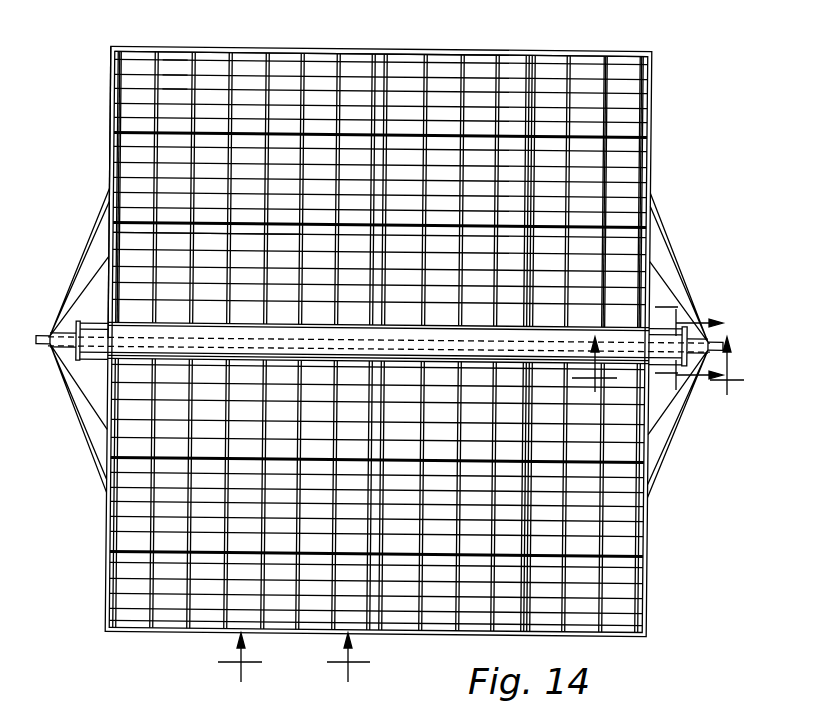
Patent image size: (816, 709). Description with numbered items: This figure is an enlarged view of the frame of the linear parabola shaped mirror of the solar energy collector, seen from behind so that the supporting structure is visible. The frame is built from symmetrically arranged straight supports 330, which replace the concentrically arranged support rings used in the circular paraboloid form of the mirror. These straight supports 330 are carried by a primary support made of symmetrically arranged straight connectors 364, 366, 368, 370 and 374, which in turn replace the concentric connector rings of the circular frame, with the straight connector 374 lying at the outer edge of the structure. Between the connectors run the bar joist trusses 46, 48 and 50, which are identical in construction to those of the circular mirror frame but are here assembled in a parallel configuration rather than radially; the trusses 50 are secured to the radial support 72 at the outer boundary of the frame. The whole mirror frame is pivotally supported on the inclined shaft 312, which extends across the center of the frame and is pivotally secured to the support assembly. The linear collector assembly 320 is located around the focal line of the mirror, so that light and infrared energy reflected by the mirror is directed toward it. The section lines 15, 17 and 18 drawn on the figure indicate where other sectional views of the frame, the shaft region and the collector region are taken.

The radial support 72 is at (245, 62).
The straight support 330 is at (179, 92).
The straight connector 374 is at (648, 53).
The straight connector 370 is at (681, 191).
The straight connector 368 is at (635, 136).
The straight connector 366 is at (626, 230).
The straight connector 364 is at (663, 191).
The truss 50 is at (118, 97).
The truss 48 is at (117, 173).
The truss 46 is at (117, 246).
The linear collector assembly 320 is at (93, 318).
The inclined shaft 312 is at (47, 343).
The section line 15- 15 is at (297, 660).
The section line 17- 17 is at (689, 350).
The section line 18- 18 is at (662, 371).